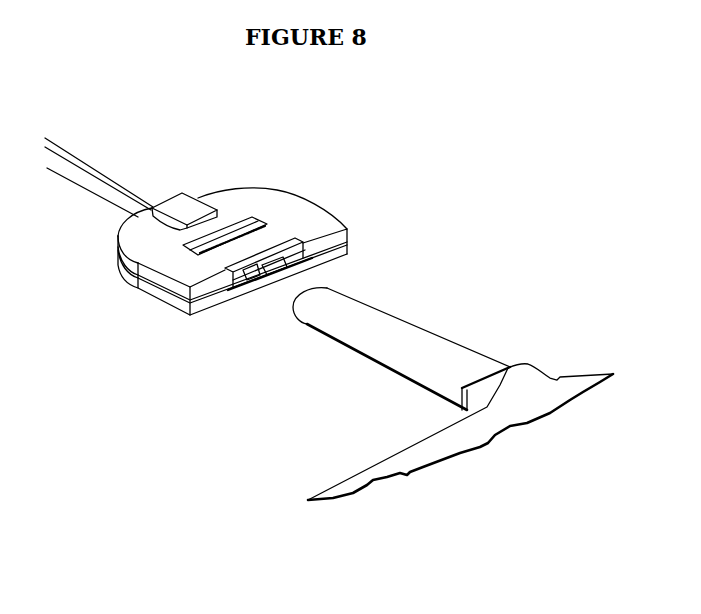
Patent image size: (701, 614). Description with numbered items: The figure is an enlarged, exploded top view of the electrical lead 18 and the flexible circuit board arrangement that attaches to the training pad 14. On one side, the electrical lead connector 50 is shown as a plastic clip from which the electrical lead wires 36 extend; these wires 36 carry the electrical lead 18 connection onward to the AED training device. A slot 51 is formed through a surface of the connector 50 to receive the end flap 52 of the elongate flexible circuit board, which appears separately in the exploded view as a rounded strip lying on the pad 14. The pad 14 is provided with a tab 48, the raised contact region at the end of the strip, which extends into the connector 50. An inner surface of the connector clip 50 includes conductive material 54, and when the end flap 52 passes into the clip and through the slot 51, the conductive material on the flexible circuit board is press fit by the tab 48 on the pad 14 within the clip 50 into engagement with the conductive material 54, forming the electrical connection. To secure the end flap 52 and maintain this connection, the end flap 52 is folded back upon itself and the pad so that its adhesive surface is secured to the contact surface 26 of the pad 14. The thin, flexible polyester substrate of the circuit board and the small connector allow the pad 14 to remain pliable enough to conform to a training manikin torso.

The electrical lead 18 is at (508, 115).
The electrical lead wires 36 is at (117, 175).
The electrical lead connector 50 is at (317, 188).
The slot 51 is at (228, 232).
The conductive material 54 is at (272, 263).
The end flap 52 is at (400, 317).
The contact surface 26 is at (443, 448).
The tab 48 is at (532, 377).
The pad 14 is at (383, 506).